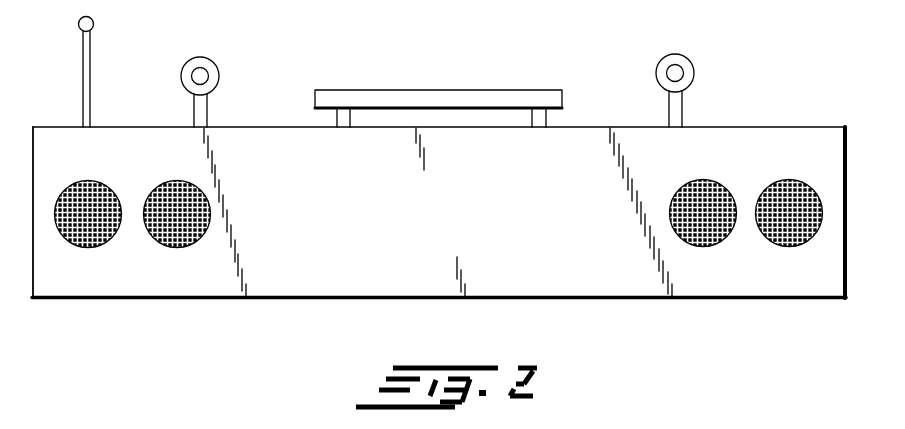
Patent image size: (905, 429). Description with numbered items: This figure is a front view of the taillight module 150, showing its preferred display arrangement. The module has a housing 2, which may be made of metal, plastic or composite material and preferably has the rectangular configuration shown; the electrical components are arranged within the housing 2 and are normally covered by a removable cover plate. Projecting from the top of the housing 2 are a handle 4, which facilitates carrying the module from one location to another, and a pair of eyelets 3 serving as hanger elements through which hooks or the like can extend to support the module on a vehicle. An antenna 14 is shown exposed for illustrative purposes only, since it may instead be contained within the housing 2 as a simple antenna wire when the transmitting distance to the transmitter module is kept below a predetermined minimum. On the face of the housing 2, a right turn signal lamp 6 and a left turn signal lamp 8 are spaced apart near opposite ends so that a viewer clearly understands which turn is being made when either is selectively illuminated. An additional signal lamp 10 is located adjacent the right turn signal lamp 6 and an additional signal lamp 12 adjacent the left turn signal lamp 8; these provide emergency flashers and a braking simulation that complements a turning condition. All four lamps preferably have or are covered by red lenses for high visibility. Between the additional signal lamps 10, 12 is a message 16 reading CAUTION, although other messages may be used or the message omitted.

The housing 2 is at (770, 126).
The eyelets 3 is at (214, 94).
The handle 4 is at (453, 90).
The right turn signal lamp 6 is at (795, 178).
The left turn signal lamp 8 is at (86, 180).
The additional signal lamp 10 is at (704, 178).
The additional signal lamp 12 is at (186, 180).
The antenna 14 is at (91, 48).
The message 16 is at (478, 181).
The taillight module 150 is at (585, 125).